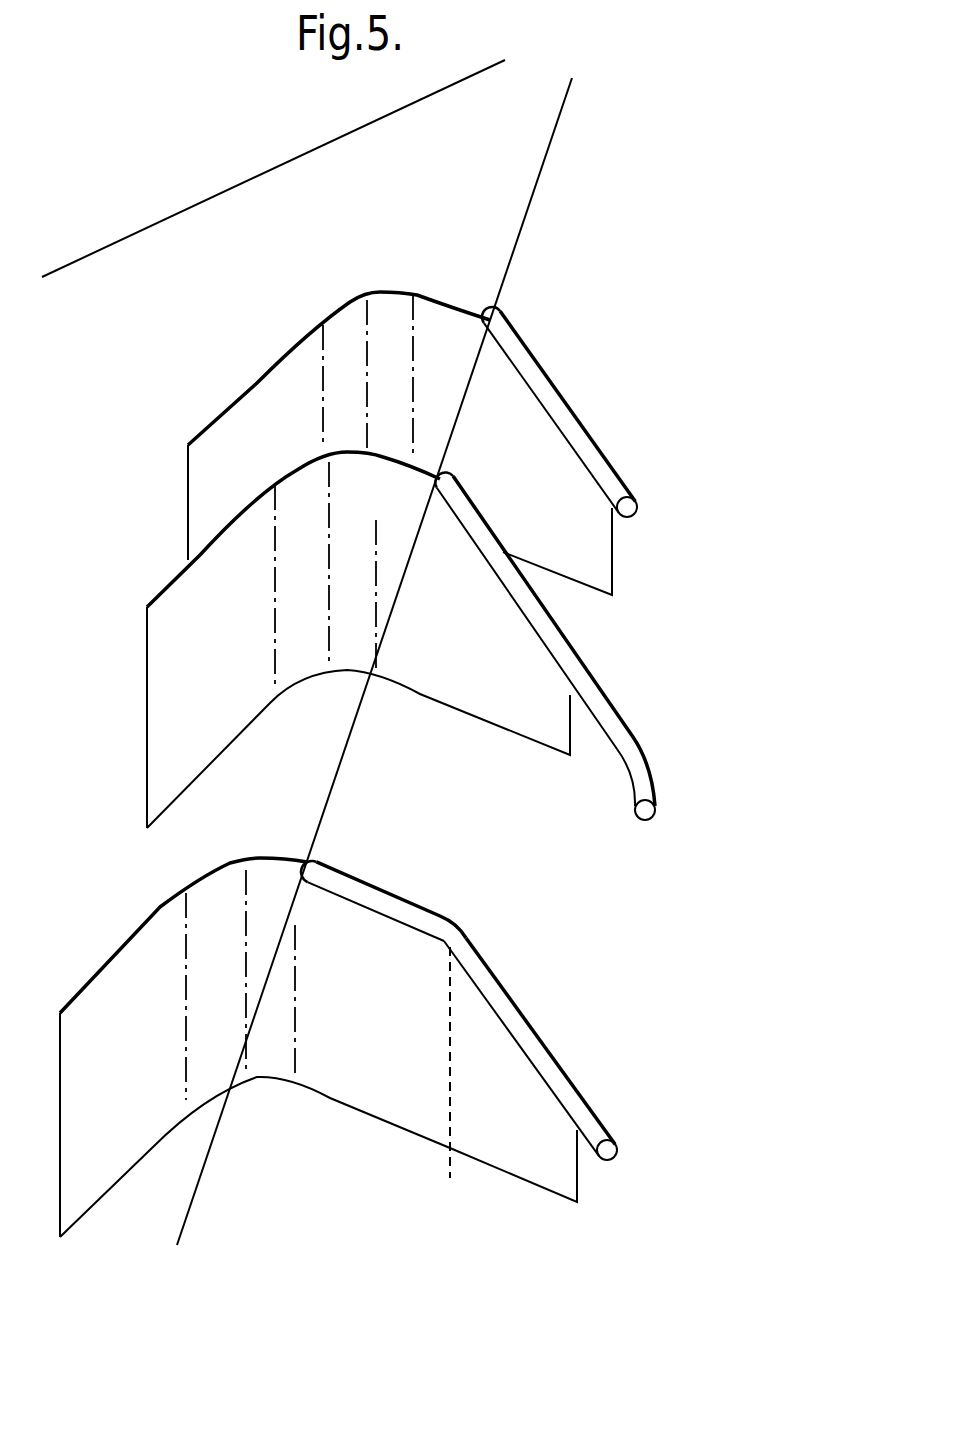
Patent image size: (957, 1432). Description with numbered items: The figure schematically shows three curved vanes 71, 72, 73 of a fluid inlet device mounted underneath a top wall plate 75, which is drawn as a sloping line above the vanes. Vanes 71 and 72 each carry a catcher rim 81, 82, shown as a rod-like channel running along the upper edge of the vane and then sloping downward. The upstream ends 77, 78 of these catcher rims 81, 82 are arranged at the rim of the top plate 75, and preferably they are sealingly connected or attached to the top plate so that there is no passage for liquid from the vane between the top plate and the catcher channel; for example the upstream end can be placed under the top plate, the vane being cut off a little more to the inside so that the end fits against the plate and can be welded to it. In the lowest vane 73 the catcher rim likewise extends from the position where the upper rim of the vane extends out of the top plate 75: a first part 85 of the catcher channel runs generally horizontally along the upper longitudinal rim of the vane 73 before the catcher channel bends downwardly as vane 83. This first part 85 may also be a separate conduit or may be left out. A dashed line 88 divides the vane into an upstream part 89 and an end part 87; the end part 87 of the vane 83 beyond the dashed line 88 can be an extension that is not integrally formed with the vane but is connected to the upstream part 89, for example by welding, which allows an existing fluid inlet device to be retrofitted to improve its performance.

The curved vane 71 is at (408, 292).
The curved vane 72 is at (271, 703).
The curved vane 73 is at (104, 1174).
The top wall plate 75 is at (230, 189).
The upstream end 77 is at (503, 312).
The upstream end 78 is at (453, 478).
The catcher rim 81 is at (540, 360).
The catcher rim 82 is at (562, 632).
The vane 83 is at (512, 1005).
The first part of the catcher channel 85 is at (385, 883).
The end part 87 is at (522, 1164).
The dashed line 88 is at (449, 1042).
The upstream part 89 is at (284, 1067).